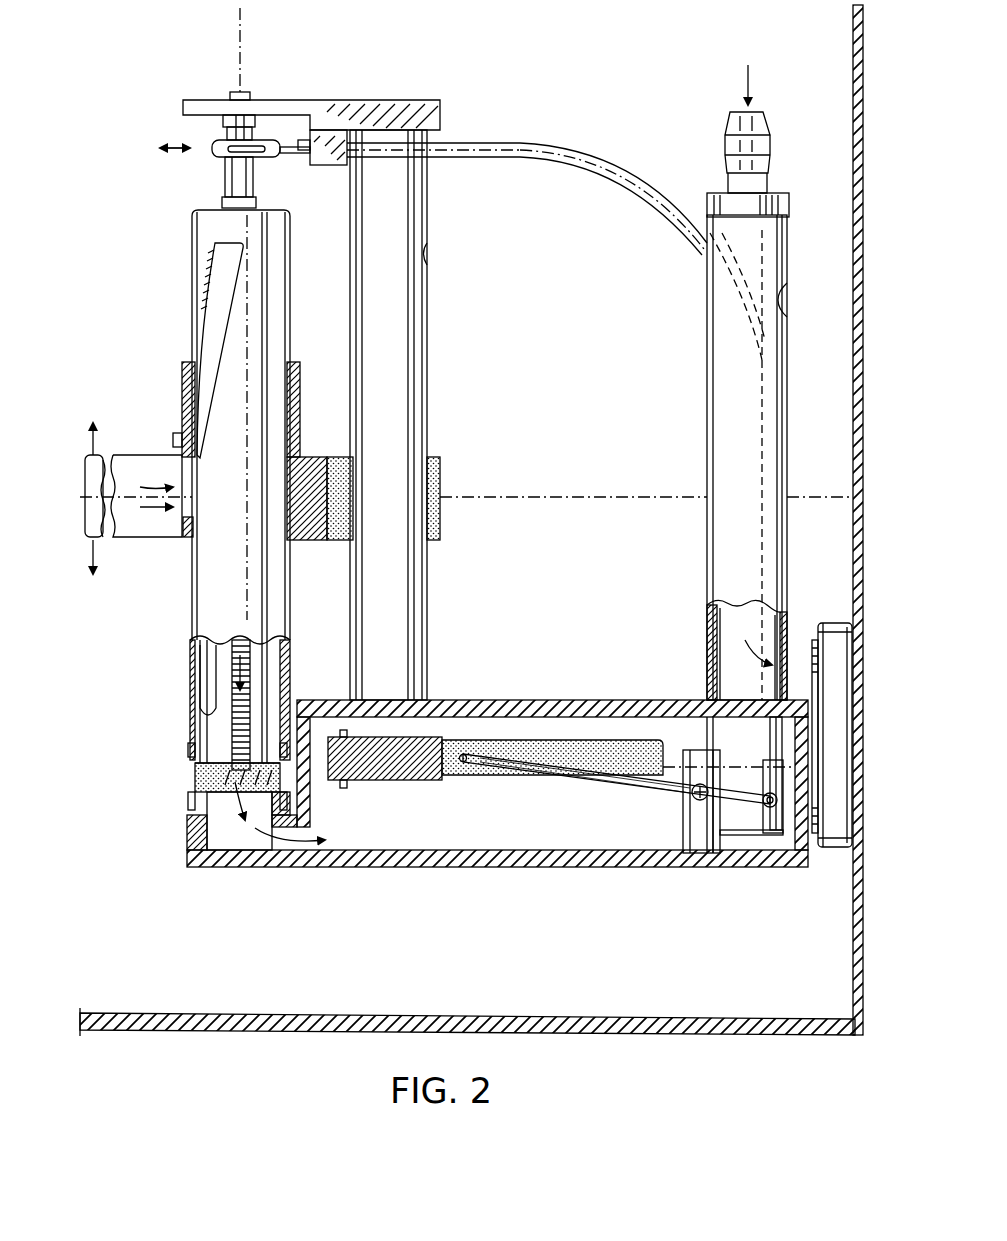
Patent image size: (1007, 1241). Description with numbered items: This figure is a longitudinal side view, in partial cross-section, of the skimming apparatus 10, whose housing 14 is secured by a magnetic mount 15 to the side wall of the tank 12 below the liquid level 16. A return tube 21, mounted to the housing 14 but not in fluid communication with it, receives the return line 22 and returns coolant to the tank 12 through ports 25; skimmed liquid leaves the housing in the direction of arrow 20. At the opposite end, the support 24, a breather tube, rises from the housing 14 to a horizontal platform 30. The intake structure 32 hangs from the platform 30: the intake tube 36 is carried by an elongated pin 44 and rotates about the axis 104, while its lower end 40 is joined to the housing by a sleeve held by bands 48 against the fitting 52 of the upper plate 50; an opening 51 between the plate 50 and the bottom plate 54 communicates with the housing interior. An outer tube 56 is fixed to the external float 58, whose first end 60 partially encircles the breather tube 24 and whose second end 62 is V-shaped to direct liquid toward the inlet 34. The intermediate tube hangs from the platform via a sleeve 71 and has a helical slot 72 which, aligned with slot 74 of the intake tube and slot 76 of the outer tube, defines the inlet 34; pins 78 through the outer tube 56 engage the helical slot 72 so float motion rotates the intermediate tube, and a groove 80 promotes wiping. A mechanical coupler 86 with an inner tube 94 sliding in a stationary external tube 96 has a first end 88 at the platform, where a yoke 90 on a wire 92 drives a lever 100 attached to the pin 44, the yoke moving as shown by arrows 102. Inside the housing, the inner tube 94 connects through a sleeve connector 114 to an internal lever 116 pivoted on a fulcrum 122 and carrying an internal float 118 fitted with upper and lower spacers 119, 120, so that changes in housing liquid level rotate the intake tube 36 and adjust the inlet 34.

The skimming apparatus 10 is at (272, 346).
The tank 12 is at (488, 1017).
The housing 14 is at (517, 700).
The mount 15 is at (830, 848).
The liquid level 16 is at (572, 497).
The directional arrow 20 is at (430, 256).
The return tube 21 is at (748, 476).
The return line 22 is at (770, 162).
The support 24 is at (402, 429).
The ports 25 is at (787, 320).
The horizontal platform 30 is at (366, 103).
The intake structure 32 is at (170, 281).
The inlet 34 is at (133, 496).
The intake tube 36 is at (222, 290).
The lower end 40 is at (188, 720).
The elongated pin 44 is at (224, 178).
The bands 48 is at (188, 752).
The upper plate 50 is at (206, 850).
The opening 51 is at (222, 832).
The fitting 52 is at (188, 780).
The bottom plate 54 is at (445, 868).
The outer tube 56 is at (188, 372).
The external float 58 is at (133, 453).
The first end 60 is at (440, 472).
The second end 62 is at (115, 557).
The sleeve 71 is at (222, 188).
The helically shaped slot 72 is at (246, 266).
The slot 74 is at (208, 318).
The slot 76 is at (190, 506).
The spaced pins 78 is at (176, 436).
The elongated groove 80 is at (250, 666).
The mechanical coupler 86 is at (582, 152).
The first end 88 is at (302, 160).
The yoke 90 is at (262, 140).
The wire 92 is at (288, 160).
The inner tube 94 is at (766, 745).
The external tube 96 is at (528, 160).
The lever 100 is at (216, 143).
The directional arrows 102 is at (158, 155).
The rotational axis 104 is at (243, 24).
The sleeve connector 114 is at (768, 840).
The internal lever 116 is at (570, 780).
The internal float 118 is at (440, 780).
The upper spacer 119 is at (345, 733).
The lower spacer 120 is at (347, 788).
The fulcrum 122 is at (690, 822).